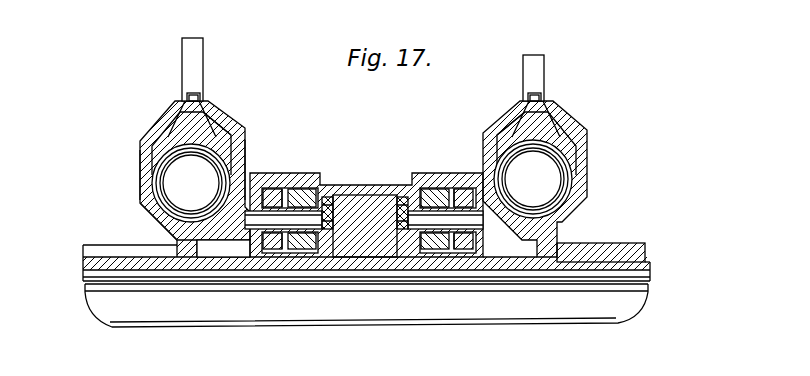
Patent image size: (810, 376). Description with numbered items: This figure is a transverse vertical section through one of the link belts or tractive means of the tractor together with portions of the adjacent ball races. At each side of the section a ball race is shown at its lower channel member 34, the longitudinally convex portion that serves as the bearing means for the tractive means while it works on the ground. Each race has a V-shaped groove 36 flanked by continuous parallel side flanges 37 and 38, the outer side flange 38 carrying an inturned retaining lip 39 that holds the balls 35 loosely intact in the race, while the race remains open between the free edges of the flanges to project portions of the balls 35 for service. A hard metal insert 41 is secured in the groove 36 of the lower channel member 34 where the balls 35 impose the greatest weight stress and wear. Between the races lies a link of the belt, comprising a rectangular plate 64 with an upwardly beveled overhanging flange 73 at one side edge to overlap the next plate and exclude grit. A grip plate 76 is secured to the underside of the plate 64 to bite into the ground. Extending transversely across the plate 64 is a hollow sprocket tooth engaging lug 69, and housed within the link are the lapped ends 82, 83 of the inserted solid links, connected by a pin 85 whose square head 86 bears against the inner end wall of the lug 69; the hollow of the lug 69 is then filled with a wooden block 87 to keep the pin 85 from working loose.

The lower channel member 34 is at (148, 136).
The ball 35 is at (362, 181).
The V-shaped groove 36 is at (180, 126).
The side flange 37 is at (247, 156).
The outer side flange 38 is at (139, 180).
The inturned retaining lip 39 is at (158, 212).
The hard metal insert 41 is at (222, 116).
The rectangular plate 64 is at (84, 264).
The hollow sprocket tooth engaging lug 69 is at (330, 184).
The upwardly beveled overhanging flange 73 is at (617, 243).
The grip plate 76 is at (597, 312).
The link end 82 is at (271, 253).
The link end 83 is at (297, 253).
The pin 85 is at (433, 211).
The square head 86 is at (397, 195).
The wooden block 87 is at (366, 257).